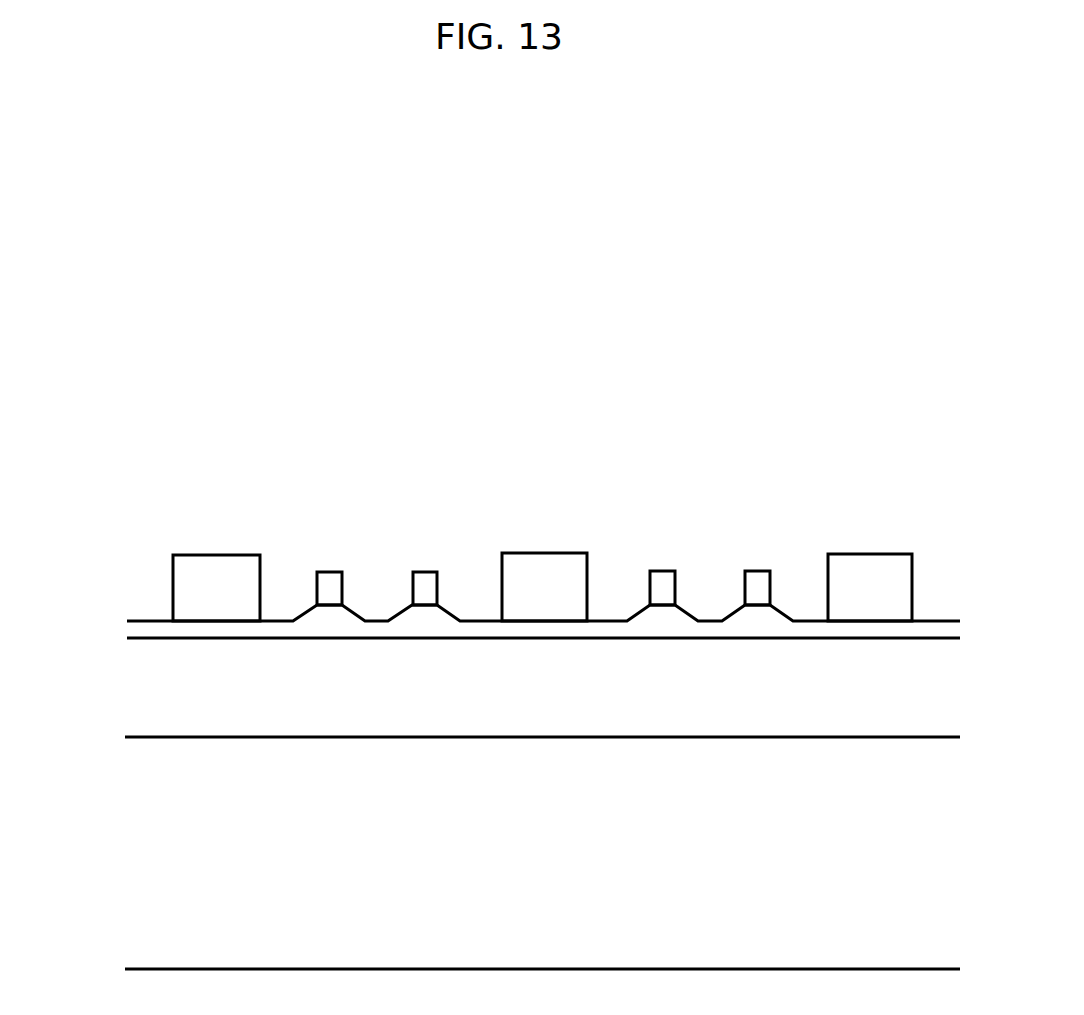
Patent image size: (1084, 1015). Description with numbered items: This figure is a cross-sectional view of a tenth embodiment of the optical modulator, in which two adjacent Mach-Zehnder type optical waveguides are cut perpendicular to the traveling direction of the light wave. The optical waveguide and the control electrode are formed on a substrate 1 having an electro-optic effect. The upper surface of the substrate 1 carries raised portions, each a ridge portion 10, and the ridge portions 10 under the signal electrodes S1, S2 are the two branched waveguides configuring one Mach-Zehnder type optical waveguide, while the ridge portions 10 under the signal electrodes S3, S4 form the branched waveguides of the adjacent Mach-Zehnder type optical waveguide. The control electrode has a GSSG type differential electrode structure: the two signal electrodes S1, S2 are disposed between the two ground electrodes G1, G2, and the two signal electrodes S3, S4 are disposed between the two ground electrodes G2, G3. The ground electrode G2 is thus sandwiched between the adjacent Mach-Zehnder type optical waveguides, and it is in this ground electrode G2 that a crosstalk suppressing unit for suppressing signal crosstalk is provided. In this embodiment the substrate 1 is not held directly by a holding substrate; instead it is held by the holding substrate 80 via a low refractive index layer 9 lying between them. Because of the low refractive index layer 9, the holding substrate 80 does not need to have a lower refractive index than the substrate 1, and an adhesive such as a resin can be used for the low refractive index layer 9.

The substrate 1 is at (148, 627).
The low refractive index layer 9 is at (551, 702).
The ridge portion 10 is at (355, 607).
The holding substrate 80 is at (558, 875).
The ground electrode G1 is at (216, 567).
The ground electrode G2 is at (544, 567).
The ground electrode G3 is at (870, 567).
The signal electrode S1 is at (327, 568).
The signal electrode S2 is at (423, 568).
The signal electrode S3 is at (660, 568).
The signal electrode S4 is at (755, 568).